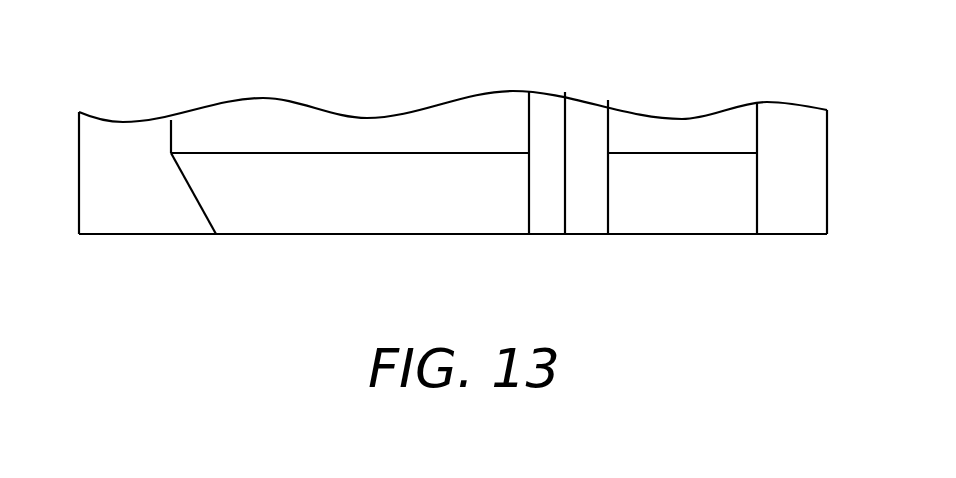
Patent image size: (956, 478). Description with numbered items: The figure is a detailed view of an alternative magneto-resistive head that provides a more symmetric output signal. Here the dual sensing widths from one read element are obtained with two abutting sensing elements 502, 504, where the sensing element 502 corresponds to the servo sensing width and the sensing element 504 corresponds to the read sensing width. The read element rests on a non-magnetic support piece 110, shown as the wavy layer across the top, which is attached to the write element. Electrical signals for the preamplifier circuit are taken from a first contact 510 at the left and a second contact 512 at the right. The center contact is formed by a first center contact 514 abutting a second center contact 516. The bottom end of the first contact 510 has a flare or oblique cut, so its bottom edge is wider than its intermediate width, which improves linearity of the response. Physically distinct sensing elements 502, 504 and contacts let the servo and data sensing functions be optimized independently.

The non-magnetic support piece 110 is at (368, 128).
The sensing element 502 is at (367, 228).
The sensing element 504 is at (692, 223).
The first contact 510 is at (125, 133).
The second contact 512 is at (790, 115).
The first center contact 514 is at (542, 98).
The second center contact 516 is at (590, 105).